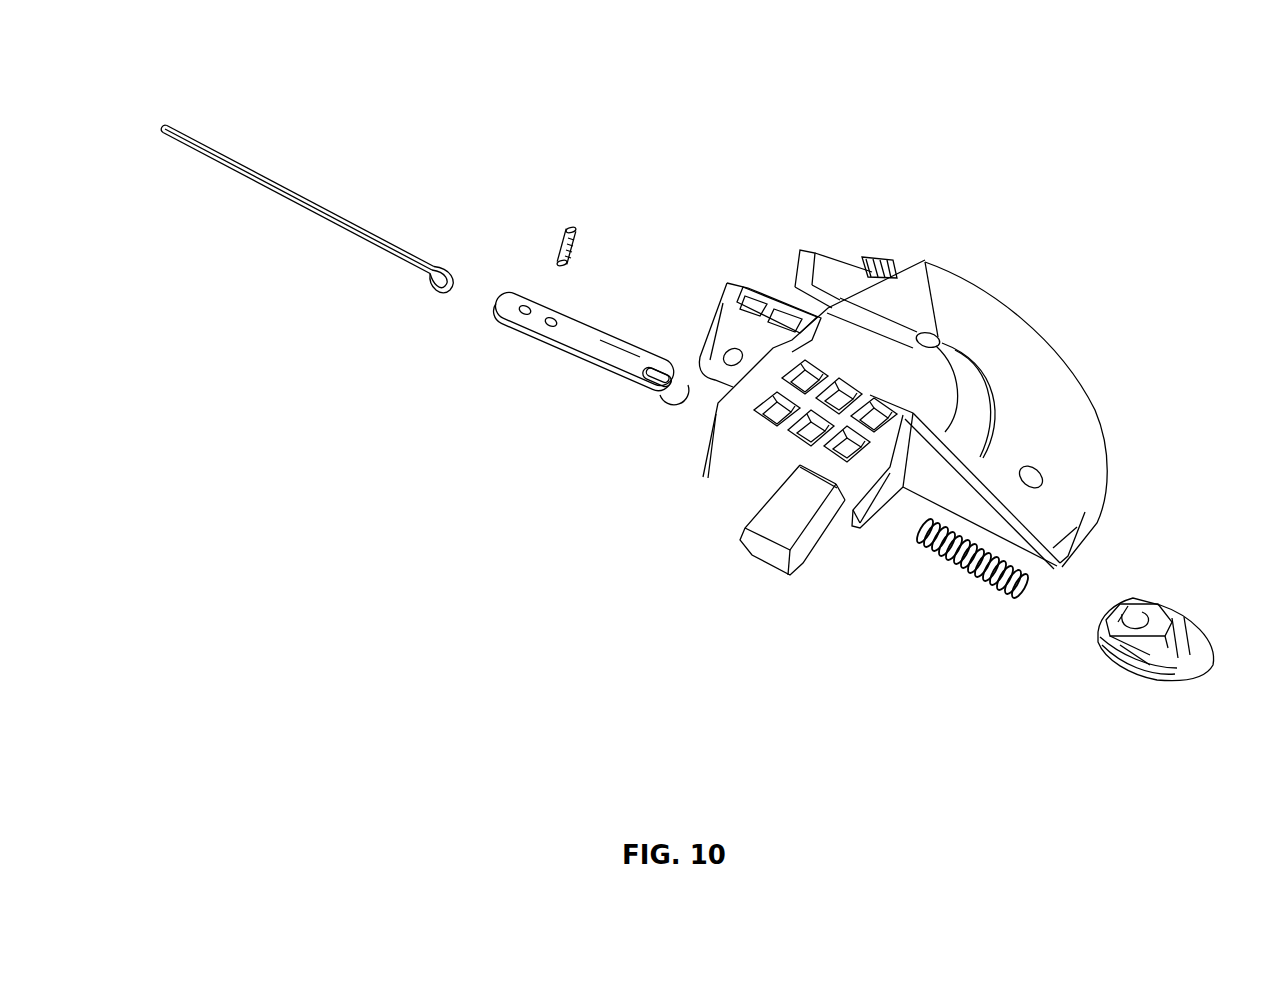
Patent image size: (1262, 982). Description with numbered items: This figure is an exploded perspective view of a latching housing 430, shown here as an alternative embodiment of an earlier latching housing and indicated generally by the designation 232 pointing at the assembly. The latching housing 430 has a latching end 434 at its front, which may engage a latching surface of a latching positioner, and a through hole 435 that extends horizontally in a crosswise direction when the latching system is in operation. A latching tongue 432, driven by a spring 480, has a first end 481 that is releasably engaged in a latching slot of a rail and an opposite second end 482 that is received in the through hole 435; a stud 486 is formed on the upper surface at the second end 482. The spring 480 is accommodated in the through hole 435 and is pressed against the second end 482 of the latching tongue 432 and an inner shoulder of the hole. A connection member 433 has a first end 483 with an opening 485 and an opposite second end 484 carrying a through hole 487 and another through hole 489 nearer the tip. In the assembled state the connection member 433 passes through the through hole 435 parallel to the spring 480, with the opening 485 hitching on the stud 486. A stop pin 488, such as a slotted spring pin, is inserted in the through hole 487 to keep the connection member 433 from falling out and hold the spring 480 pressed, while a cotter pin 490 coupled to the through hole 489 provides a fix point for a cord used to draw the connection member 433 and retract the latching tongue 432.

The lock assembly 232 is at (790, 118).
The latching housing 430 is at (908, 288).
The latching tongue 432 is at (1137, 653).
The connection member 433 is at (630, 352).
The latching end 434 is at (763, 550).
The through hole 435 is at (863, 527).
The spring 480 is at (950, 572).
The first end 481 is at (1173, 680).
The second end 482 is at (1110, 648).
The first end 483 is at (642, 390).
The second end 484 is at (510, 325).
The opening 485 is at (655, 375).
The stud 486 is at (1128, 615).
The through hole 487 is at (556, 313).
The stop pin 488 is at (573, 224).
The through hole 489 is at (524, 304).
The cotter pin 490 is at (363, 225).